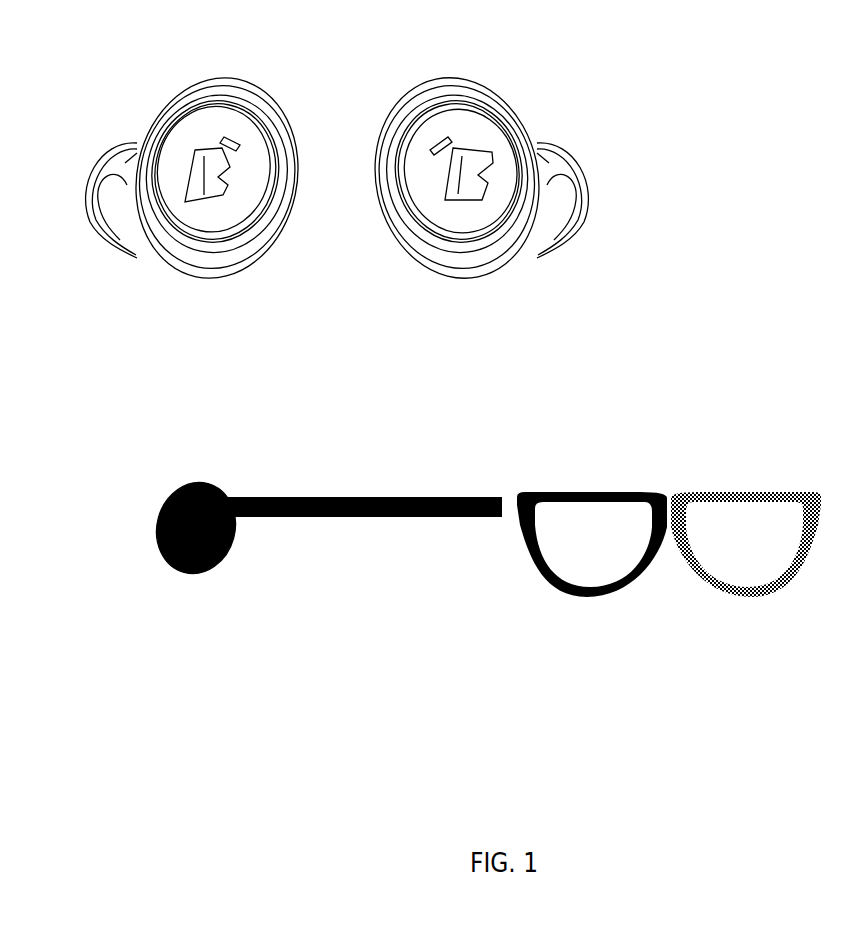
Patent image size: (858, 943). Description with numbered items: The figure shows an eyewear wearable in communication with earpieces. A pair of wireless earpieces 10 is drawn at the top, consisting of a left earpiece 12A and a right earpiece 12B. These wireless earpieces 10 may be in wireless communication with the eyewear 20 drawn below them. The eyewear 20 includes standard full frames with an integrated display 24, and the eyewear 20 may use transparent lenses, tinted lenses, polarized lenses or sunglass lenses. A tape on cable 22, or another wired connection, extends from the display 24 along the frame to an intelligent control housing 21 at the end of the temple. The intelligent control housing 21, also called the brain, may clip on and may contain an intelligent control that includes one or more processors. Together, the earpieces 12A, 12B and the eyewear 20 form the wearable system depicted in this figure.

The pair of wireless earpieces 10 is at (338, 211).
The left earpiece 12A is at (217, 78).
The right earpiece 12B is at (465, 80).
The eyewear 20 is at (432, 534).
The intelligent control housing 21 is at (175, 495).
The tape on cable 22 is at (453, 497).
The integrated display 24 is at (612, 513).